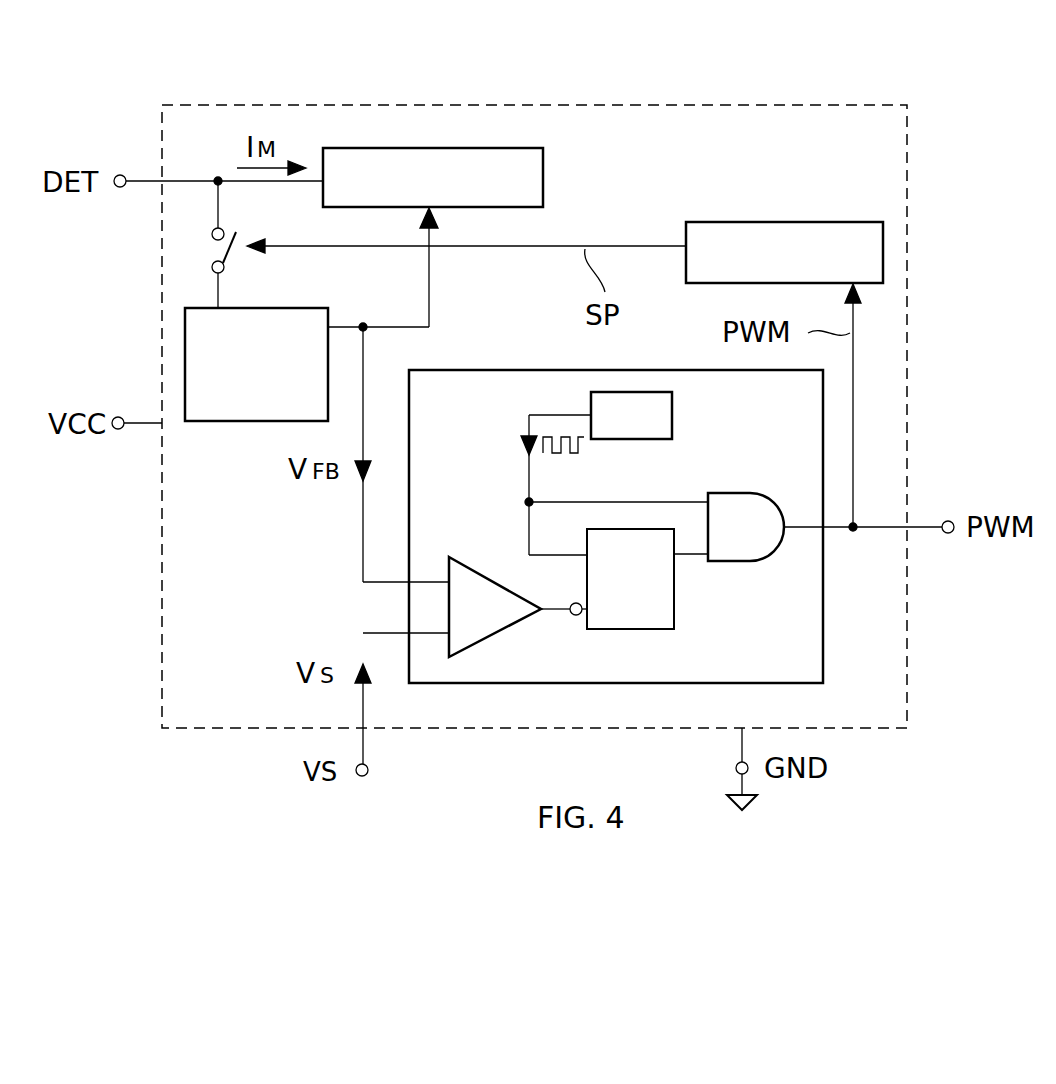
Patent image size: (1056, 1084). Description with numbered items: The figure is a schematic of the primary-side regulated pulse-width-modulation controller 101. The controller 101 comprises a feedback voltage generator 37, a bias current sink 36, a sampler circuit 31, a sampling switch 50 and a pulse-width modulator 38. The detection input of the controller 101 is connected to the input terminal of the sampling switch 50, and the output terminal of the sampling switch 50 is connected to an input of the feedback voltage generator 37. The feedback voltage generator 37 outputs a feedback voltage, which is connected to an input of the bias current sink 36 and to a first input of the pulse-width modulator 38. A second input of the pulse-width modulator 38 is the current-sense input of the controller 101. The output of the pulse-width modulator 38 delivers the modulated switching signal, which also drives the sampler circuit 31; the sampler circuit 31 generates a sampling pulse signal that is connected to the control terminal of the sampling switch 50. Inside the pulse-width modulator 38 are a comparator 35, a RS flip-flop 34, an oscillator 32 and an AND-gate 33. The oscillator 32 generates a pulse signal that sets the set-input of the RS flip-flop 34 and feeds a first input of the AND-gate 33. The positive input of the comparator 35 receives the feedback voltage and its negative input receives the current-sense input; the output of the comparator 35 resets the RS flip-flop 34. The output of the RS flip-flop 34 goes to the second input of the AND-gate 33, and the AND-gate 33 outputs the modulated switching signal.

The PWM controller 101 is at (907, 150).
The sampling switch 50 is at (204, 245).
The bias current sink 36 is at (548, 172).
The sampler circuit 31 is at (741, 222).
The feedback voltage generator 37 is at (226, 425).
The pulse-width modulator 38 is at (512, 368).
The oscillator 32 is at (678, 422).
The comparator 35 is at (482, 570).
The RS flip-flop 34 is at (680, 625).
The AND-gate 33 is at (742, 565).